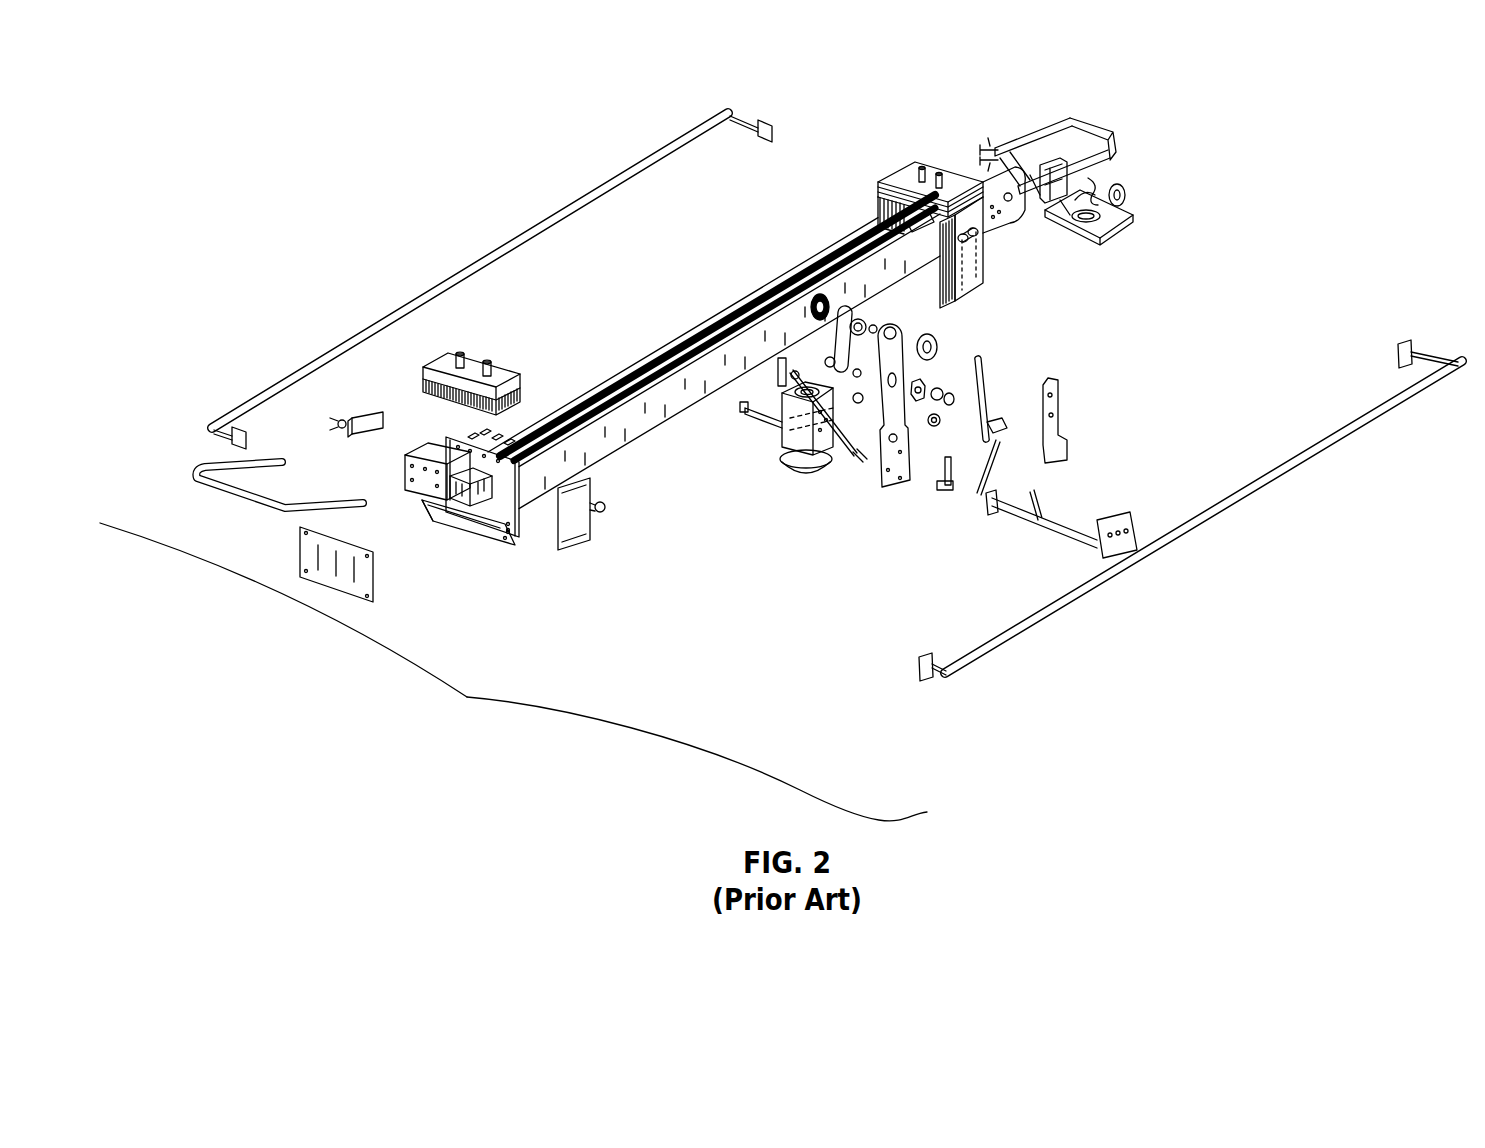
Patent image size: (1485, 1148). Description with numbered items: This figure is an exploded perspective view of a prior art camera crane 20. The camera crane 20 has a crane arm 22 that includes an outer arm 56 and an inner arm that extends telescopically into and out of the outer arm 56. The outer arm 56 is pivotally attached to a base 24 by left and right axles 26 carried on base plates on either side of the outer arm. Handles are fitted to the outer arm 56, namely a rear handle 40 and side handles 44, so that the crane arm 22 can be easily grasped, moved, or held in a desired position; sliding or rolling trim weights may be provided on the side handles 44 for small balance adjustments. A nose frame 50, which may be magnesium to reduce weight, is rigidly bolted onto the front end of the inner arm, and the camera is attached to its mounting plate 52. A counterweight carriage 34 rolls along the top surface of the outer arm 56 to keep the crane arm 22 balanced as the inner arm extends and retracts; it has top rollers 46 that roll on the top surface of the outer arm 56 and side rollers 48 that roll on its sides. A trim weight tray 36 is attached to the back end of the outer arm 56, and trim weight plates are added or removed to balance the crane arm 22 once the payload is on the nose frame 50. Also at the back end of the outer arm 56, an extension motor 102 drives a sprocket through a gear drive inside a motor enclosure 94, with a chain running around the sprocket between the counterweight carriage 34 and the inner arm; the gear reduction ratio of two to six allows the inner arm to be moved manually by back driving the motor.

The camera crane 20 is at (728, 572).
The crane arm 22 is at (647, 363).
The base 24 is at (804, 491).
The axles 26 is at (812, 372).
The counterweight carriage 34 is at (939, 156).
The trim weight tray 36 is at (530, 378).
The rear handle 40 is at (255, 498).
The side handles 44 is at (547, 224).
The top rollers 46 is at (877, 208).
The side rollers 48 is at (929, 227).
The nose frame 50 is at (1104, 117).
The mounting plate 52 is at (1092, 238).
The outer arm 56 is at (671, 402).
The motor enclosure 94 is at (412, 478).
The extension motor 102 is at (420, 497).